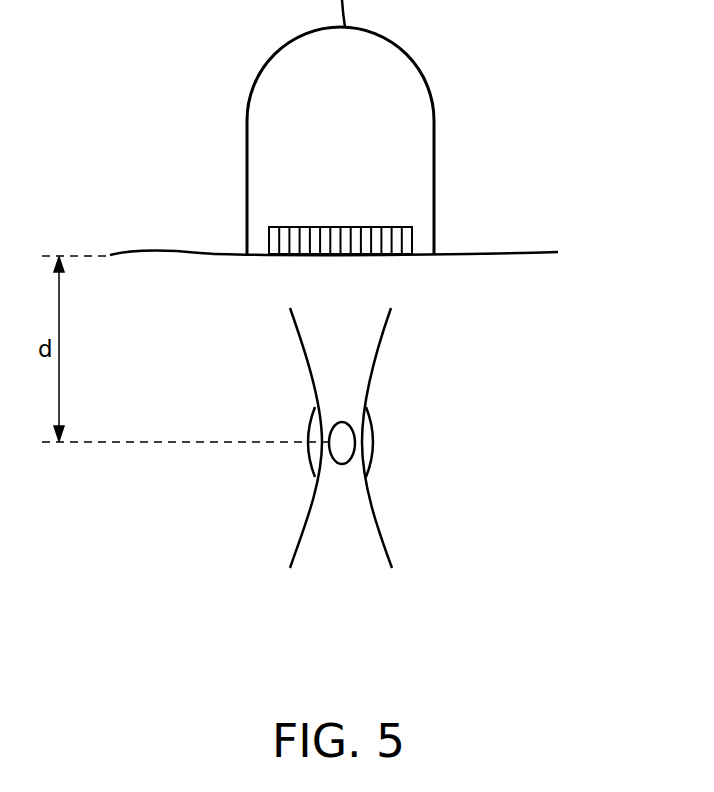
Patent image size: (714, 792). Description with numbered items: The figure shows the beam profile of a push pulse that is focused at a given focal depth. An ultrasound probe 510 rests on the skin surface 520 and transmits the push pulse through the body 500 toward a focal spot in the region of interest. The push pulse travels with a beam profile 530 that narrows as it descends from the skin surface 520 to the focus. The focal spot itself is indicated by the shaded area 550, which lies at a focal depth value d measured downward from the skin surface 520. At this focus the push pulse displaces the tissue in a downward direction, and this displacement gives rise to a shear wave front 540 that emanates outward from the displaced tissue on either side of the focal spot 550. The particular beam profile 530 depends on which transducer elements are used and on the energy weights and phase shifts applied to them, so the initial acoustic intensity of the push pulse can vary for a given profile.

The body 500 is at (530, 338).
The ultrasound probe 510 is at (434, 125).
The skin surface 520 is at (187, 250).
The beam profile 530 is at (311, 357).
The shear wave front 540 is at (308, 460).
The focal spot 550 is at (342, 464).